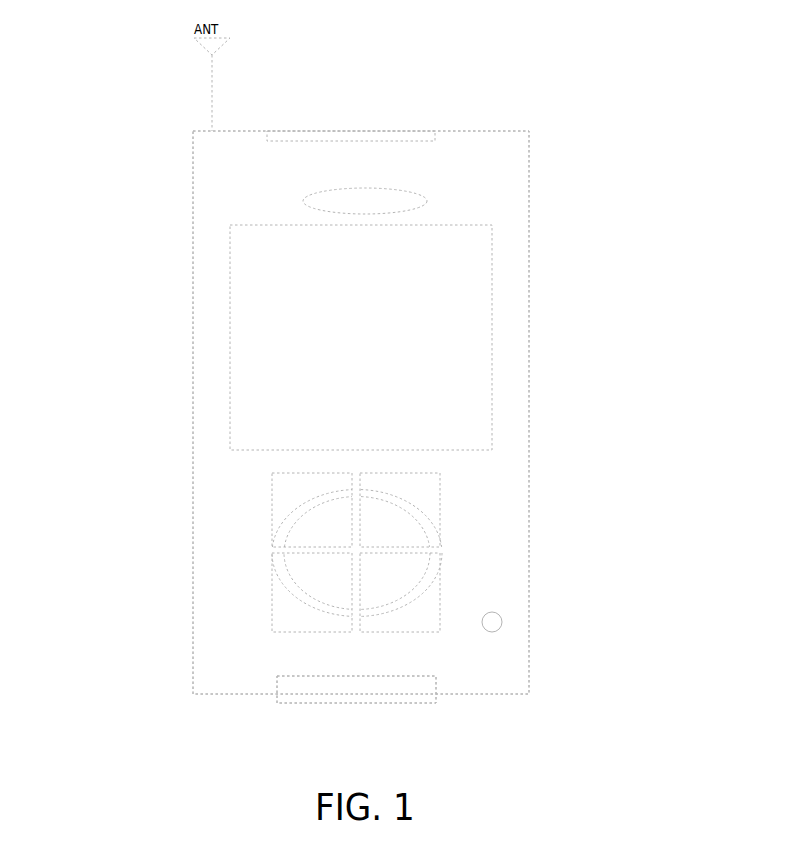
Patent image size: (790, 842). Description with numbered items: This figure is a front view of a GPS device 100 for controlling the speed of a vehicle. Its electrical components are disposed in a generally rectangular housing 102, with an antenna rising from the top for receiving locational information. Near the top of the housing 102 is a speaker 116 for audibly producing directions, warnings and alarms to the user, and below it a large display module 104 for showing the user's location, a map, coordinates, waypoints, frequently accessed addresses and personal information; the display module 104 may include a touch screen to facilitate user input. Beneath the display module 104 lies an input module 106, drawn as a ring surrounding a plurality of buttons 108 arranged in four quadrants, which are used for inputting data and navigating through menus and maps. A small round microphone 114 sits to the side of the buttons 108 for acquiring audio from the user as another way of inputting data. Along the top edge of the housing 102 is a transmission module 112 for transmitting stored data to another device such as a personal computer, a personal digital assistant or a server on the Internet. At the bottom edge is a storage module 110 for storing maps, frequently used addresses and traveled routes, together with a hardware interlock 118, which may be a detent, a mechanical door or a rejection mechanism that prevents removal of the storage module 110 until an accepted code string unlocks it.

The GPS device 100 is at (638, 220).
The housing 102 is at (193, 170).
The display module 104 is at (492, 310).
The input module 106 is at (470, 562).
The buttons 108 is at (305, 523).
The storage module 110 is at (277, 683).
The transmission module 112 is at (388, 131).
The microphone 114 is at (492, 612).
The speaker 116 is at (366, 188).
The hardware interlock 118 is at (418, 703).